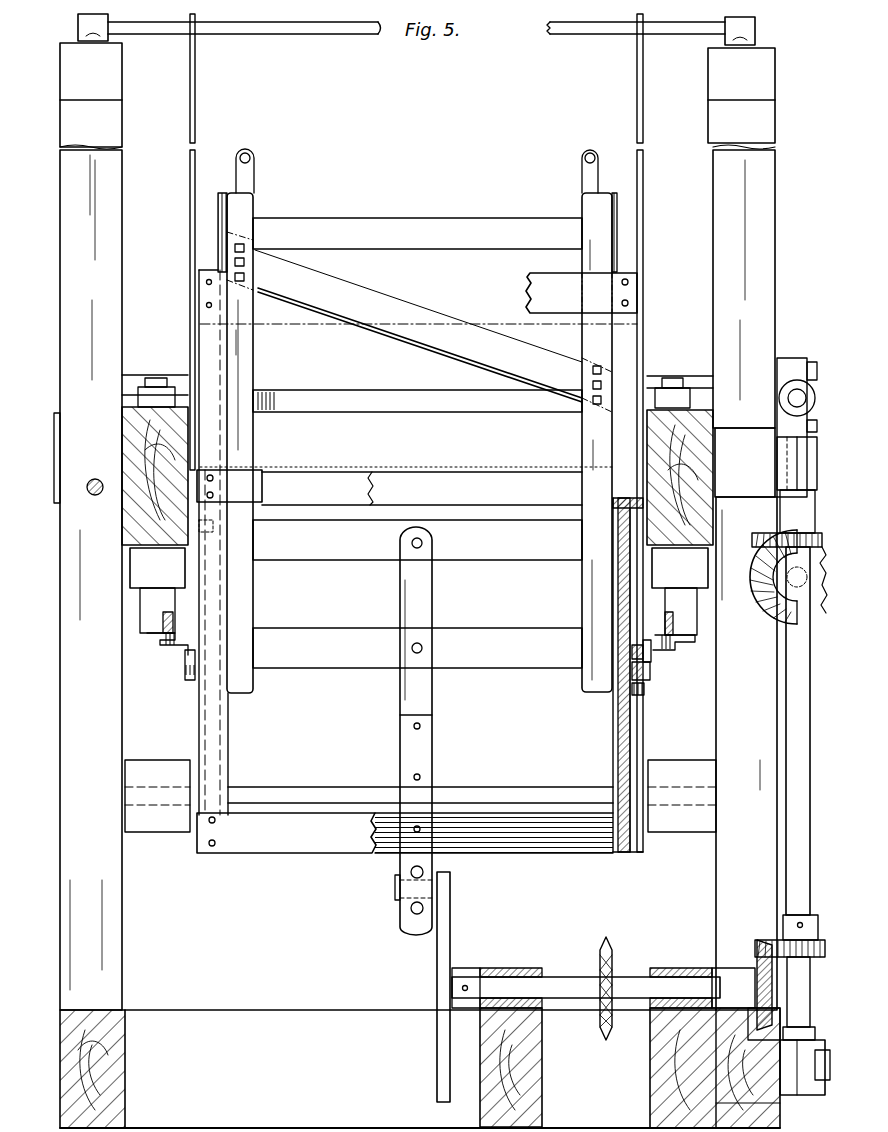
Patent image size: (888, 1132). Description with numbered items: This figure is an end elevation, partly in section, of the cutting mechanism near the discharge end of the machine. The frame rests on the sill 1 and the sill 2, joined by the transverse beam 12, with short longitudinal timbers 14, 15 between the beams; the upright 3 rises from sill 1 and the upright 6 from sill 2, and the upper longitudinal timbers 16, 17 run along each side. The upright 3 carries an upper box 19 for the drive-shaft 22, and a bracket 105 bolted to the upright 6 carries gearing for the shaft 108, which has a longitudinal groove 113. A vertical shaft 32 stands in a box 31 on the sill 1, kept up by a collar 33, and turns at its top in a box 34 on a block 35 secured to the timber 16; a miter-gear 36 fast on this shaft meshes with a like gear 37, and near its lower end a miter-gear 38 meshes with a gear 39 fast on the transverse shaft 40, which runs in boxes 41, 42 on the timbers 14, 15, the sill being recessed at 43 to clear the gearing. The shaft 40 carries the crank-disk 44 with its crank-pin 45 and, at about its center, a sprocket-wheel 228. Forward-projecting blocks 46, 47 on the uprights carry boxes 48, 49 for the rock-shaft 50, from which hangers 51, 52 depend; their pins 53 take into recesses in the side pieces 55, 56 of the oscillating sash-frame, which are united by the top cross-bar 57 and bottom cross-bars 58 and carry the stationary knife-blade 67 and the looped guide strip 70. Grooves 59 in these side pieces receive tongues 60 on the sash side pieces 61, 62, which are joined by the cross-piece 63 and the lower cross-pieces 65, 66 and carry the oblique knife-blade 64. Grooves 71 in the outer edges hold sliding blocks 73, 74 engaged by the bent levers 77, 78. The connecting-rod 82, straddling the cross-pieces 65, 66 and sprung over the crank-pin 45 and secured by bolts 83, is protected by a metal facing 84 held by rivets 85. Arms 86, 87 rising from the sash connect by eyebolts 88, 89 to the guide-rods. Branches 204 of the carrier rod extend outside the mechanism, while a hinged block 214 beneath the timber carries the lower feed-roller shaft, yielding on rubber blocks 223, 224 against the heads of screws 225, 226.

The sill 1 is at (770, 1112).
The sill 2 is at (62, 1075).
The upright 3 is at (775, 743).
The upright 6 is at (91, 580).
The transverse beam 12 is at (372, 1006).
The short longitudinal timber 14 is at (660, 1075).
The short longitudinal timber 15 is at (542, 1090).
The upper longitudinal timber 16 is at (686, 418).
The upper longitudinal timber 17 is at (148, 416).
The upper box 19 is at (778, 368).
The drive-shaft 22 is at (788, 400).
The box 31 is at (805, 1067).
The vertical shaft 32 is at (801, 992).
The collar 33 is at (799, 1024).
The box 34 is at (790, 452).
The block 35 is at (745, 462).
The miter-gear 36 is at (797, 533).
The miter-gear 37 is at (752, 555).
The miter-gear 38 is at (771, 940).
The miter-gear 39 is at (757, 960).
The transverse shaft 40 is at (572, 977).
The box 41 is at (686, 968).
The box 42 is at (510, 968).
The recess 43 is at (763, 1025).
The crank-disk 44 is at (437, 1062).
The crank-pin 45 is at (394, 890).
The forward-projecting block 46 is at (742, 529).
The forward-projecting block 47 is at (122, 75).
The box 48 is at (748, 28).
The box 49 is at (80, 25).
The rock-shaft 50 is at (335, 32).
The hanger 51 is at (637, 72).
The hanger 52 is at (197, 90).
The pin 53 is at (615, 675).
The side piece of sash-frame 55 is at (612, 345).
The side piece of sash-frame 56 is at (216, 738).
The cross-bar 57 is at (527, 290).
The cross-bar 58 is at (336, 850).
The vertical groove 59 is at (615, 852).
The vertical tongue 60 is at (217, 202).
The side piece of sash 61 is at (598, 196).
The side piece of sash 62 is at (245, 215).
The cross-piece 63 is at (468, 228).
The knife-blade 64 is at (440, 318).
The cross-piece 65 is at (417, 540).
The cross-piece 66 is at (417, 648).
The stationary knife-blade 67 is at (406, 447).
The strip 70 is at (229, 486).
The groove 71 is at (636, 731).
The sliding block 73 is at (645, 690).
The sliding block 74 is at (651, 676).
The bent lever 77 is at (652, 660).
The bent lever 78 is at (186, 672).
The connecting-rod 82 is at (400, 700).
The bolt 83 is at (423, 906).
The metal facing 84 is at (418, 812).
The rivet 85 is at (420, 775).
The arm 86 is at (580, 176).
The arm 87 is at (254, 182).
The eyebolt 88 is at (590, 152).
The eyebolt 89 is at (251, 157).
The bracket 105 is at (54, 466).
The shaft 108 is at (97, 478).
The longitudinal groove 113 is at (680, 568).
The branch 204 is at (162, 633).
The hinged block 214 is at (157, 568).
The rubber block 223 is at (682, 611).
The rubber block 224 is at (142, 608).
The screw 225 is at (690, 642).
The screw 226 is at (160, 642).
The sprocket-wheel 228 is at (613, 970).